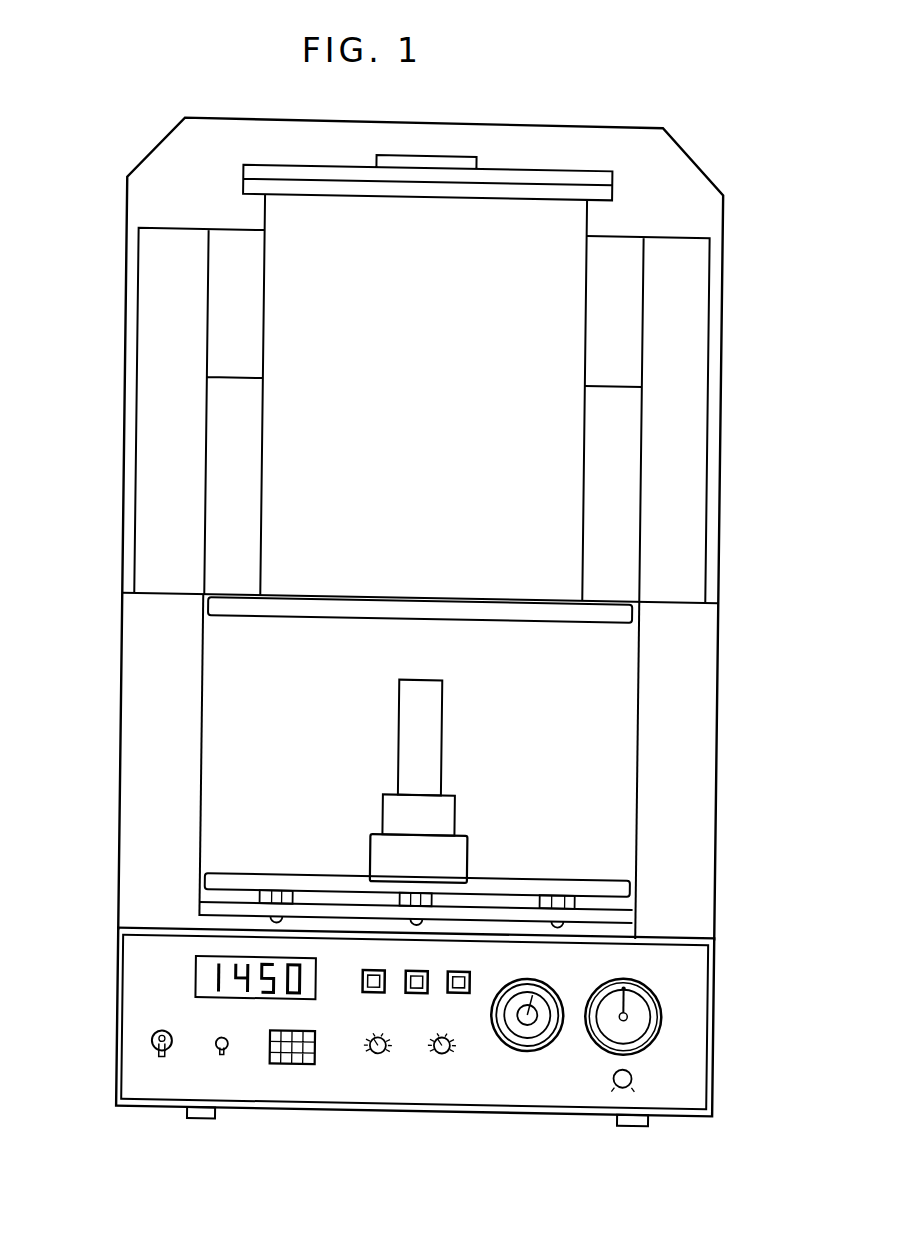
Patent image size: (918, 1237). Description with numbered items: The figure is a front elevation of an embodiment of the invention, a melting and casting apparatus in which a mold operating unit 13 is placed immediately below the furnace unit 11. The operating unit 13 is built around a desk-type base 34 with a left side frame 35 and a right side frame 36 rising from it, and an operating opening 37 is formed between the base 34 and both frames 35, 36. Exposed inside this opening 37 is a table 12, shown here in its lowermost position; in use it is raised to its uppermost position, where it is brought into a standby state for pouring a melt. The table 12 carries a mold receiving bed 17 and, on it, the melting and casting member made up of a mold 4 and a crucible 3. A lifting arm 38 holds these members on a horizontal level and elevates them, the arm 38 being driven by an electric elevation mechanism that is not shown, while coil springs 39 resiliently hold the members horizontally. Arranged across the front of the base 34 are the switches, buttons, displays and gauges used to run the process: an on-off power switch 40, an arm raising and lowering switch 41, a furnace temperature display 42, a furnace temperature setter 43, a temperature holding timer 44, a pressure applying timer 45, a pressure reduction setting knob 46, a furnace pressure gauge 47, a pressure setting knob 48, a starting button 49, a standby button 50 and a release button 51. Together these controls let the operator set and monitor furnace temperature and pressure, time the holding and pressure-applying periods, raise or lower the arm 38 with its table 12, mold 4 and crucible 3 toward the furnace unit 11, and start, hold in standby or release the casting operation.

The furnace unit 11 is at (121, 359).
The mold operating unit 13 is at (122, 676).
The crucible 3 is at (429, 697).
The mold 4 is at (442, 820).
The mold receiving bed 17 is at (463, 871).
The table 12 is at (521, 877).
The coil springs 39 is at (423, 900).
The lifting arm 38 is at (612, 915).
The left side frame 35 is at (176, 687).
The right side frame 36 is at (708, 673).
The operating opening 37 is at (612, 795).
The desk-type base 34 is at (704, 963).
The on-off power switch 40 is at (156, 1048).
The arm raising and lowering switch 41 is at (220, 1044).
The furnace temperature display 42 is at (199, 980).
The furnace temperature setter 43 is at (318, 1067).
The temperature holding timer 44 is at (387, 1053).
The pressure applying timer 45 is at (450, 1057).
The pressure reduction setting knob 46 is at (542, 1048).
The furnace pressure gauge 47 is at (662, 1003).
The pressure setting knob 48 is at (638, 1081).
The starting button 49 is at (366, 983).
The standby button 50 is at (427, 993).
The release button 51 is at (474, 984).